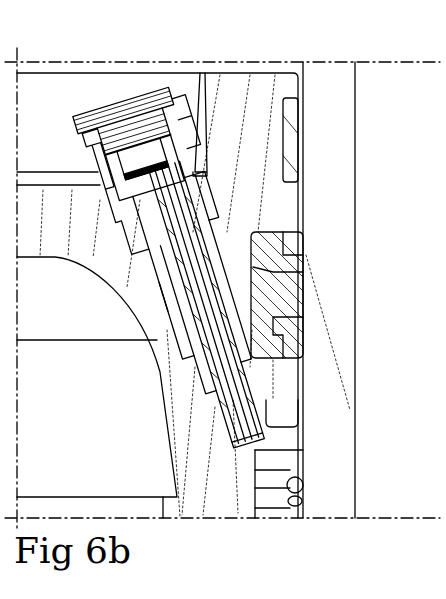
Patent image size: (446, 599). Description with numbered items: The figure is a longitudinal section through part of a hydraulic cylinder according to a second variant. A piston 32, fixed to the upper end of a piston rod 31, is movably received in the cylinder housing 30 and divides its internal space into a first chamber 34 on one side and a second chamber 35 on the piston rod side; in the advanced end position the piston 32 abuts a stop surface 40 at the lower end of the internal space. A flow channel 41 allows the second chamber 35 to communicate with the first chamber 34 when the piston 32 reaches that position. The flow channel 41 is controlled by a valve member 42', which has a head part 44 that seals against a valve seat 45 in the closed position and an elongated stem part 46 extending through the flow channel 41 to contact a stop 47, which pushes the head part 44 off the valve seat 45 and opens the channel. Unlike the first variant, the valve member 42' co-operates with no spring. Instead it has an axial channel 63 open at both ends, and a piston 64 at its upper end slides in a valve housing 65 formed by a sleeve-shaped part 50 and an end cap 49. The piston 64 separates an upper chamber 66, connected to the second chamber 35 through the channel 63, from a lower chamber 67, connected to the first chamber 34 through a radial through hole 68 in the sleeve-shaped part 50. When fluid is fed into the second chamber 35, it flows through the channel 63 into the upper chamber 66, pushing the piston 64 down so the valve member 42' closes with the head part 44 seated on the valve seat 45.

The cylinder housing 30 is at (336, 128).
The piston rod 31 is at (192, 512).
The piston 32 is at (236, 85).
The first chamber 34 is at (32, 88).
The second chamber 35 is at (245, 513).
The stop surface 40 is at (276, 450).
The flow channel 41 is at (168, 320).
The valve member 42' is at (107, 337).
The head part 44 is at (140, 255).
The valve seat 45 is at (215, 216).
The stem part 46 is at (212, 375).
The stop 47 is at (256, 450).
The end cap 49 is at (140, 100).
The sleeve-shaped part 50 is at (95, 165).
The axial channel 63 is at (236, 402).
The piston 64 is at (128, 157).
The valve housing 65 is at (178, 98).
The upper chamber 66 is at (133, 163).
The lower chamber 67 is at (133, 220).
The through hole 68 is at (206, 176).